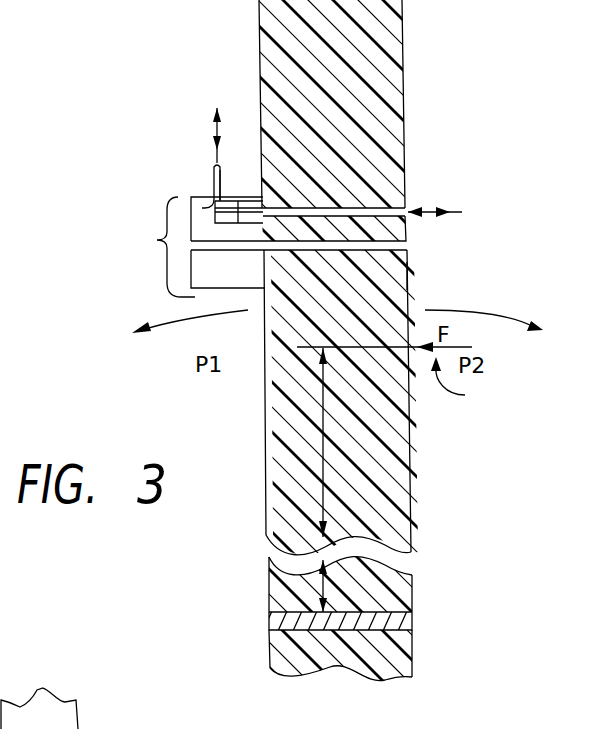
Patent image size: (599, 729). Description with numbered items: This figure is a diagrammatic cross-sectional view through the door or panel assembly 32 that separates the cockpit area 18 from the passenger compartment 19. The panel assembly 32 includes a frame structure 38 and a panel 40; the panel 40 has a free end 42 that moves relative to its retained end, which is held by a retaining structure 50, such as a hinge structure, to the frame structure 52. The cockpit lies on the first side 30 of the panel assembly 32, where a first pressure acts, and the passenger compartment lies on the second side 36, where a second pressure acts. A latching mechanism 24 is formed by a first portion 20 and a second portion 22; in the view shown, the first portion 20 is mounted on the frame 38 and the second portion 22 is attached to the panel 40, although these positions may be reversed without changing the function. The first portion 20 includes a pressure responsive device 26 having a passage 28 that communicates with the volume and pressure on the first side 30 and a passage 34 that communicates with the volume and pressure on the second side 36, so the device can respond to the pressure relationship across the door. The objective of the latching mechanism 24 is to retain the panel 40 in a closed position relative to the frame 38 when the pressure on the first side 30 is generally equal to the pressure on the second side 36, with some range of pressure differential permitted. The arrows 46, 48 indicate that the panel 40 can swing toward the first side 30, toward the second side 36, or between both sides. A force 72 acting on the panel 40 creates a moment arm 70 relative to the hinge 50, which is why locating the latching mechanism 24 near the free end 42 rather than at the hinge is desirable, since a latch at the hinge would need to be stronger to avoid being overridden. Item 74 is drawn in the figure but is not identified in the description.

The cockpit area 18 is at (144, 412).
The passenger compartment 19 is at (559, 414).
The first portion 20 is at (192, 196).
The second portion 22 is at (190, 297).
The latching mechanism 24 is at (142, 241).
The pressure responsive device 26 is at (205, 196).
The passage 28 is at (221, 188).
The first side 30 is at (105, 41).
The panel assembly 32 is at (490, 265).
The passage 34 is at (382, 207).
The second side 36 is at (555, 88).
The frame structure 38 is at (422, 113).
The panel 40 is at (426, 447).
The free end 42 is at (408, 276).
The arrow 46 is at (168, 318).
The arrow 48 is at (495, 316).
The retaining structure 50 is at (430, 617).
The frame structure 52 is at (413, 658).
The moment arm 70 is at (322, 457).
The force 72 is at (463, 384).
The plate 74 is at (413, 600).